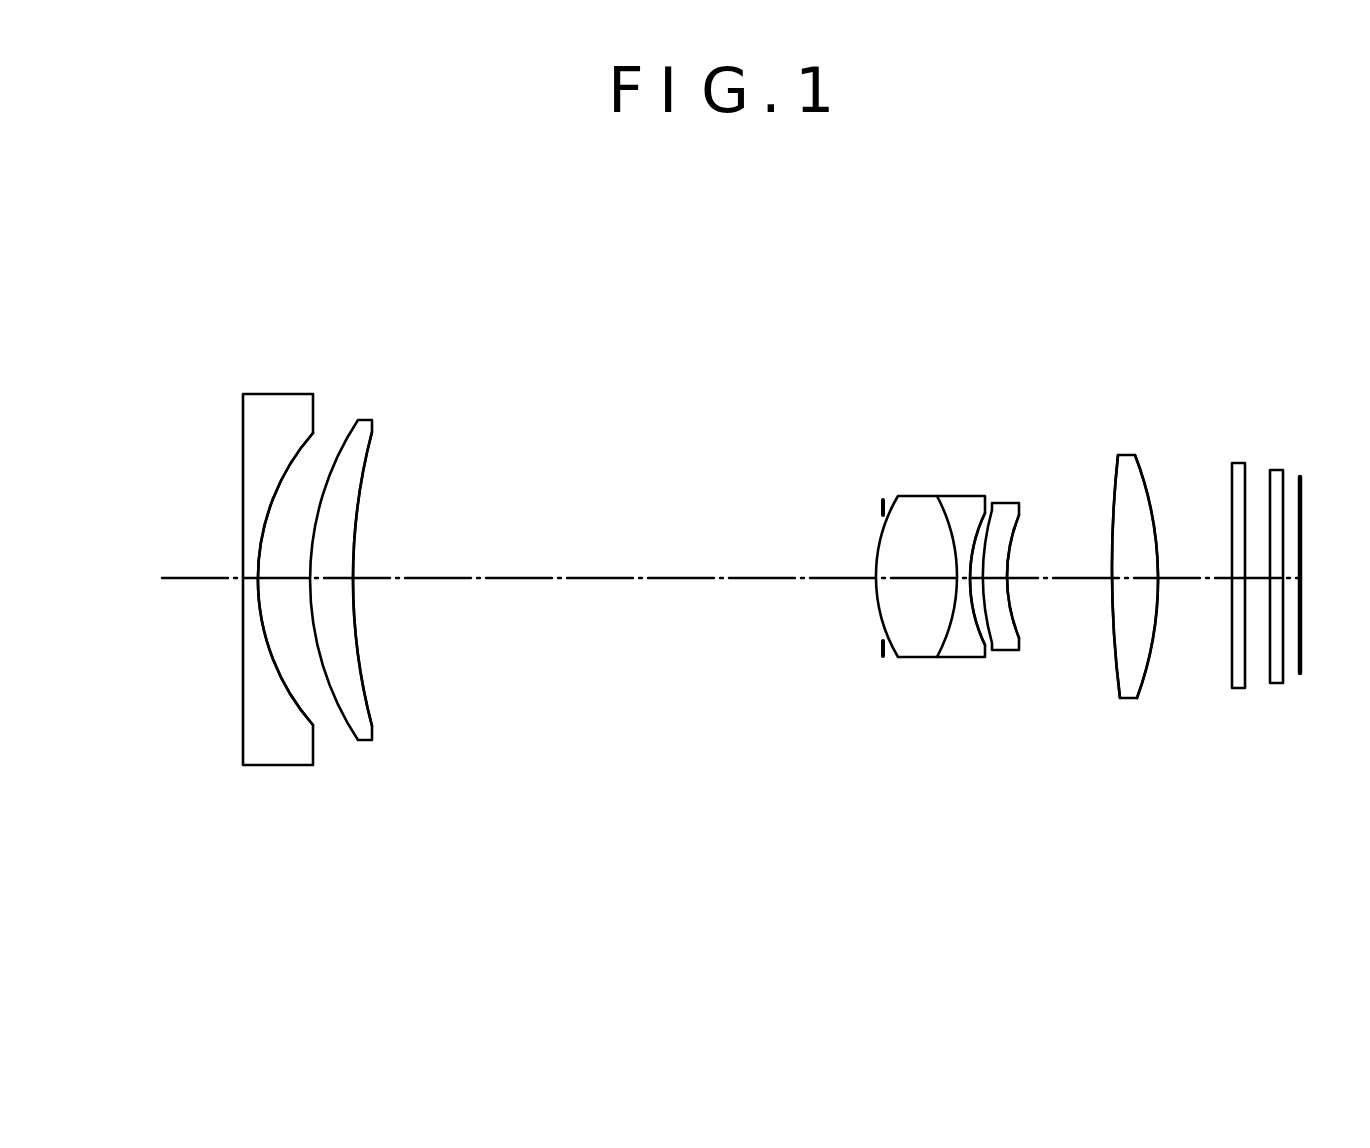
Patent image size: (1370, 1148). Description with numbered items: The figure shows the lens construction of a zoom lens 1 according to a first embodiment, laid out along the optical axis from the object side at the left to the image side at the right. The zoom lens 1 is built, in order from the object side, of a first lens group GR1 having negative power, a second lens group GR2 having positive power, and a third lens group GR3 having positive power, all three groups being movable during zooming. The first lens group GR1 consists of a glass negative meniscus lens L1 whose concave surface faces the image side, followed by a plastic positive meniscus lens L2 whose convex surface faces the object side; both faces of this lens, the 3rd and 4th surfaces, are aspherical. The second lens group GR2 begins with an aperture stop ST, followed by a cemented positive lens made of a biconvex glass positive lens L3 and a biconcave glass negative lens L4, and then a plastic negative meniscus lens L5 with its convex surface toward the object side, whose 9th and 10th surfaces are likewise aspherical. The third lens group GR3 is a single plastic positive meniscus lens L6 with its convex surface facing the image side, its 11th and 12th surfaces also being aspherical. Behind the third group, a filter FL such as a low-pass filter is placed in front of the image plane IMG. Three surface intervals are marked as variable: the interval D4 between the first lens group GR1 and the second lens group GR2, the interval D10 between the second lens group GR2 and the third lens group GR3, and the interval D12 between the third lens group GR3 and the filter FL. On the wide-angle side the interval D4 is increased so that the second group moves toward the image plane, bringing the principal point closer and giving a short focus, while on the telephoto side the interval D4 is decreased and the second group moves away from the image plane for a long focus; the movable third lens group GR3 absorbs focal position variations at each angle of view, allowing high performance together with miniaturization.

The zoom lens 1 is at (712, 312).
The first lens group GR1 is at (385, 314).
The second lens group GR2 is at (1033, 361).
The third lens group GR3 is at (1170, 361).
The negative meniscus lens L1 is at (280, 394).
The positive meniscus lens L2 is at (366, 420).
The positive lens L3 is at (905, 496).
The negative lens L4 is at (958, 496).
The negative meniscus lens L5 is at (1008, 503).
The positive meniscus lens L6 is at (1128, 455).
The aperture stop ST is at (881, 506).
The surface interval D4 is at (617, 578).
The surface interval D10 is at (1068, 578).
The surface interval D12 is at (1204, 578).
The filter FL is at (1277, 684).
The image plane IMG is at (1300, 653).
The 3rd surface 3rd is at (320, 652).
The 4th surface 4th is at (365, 673).
The 9th surface 9th is at (980, 613).
The 10th surface 10th is at (1013, 602).
The 11th surface 11th is at (1117, 660).
The 12th surface 12th is at (1152, 658).